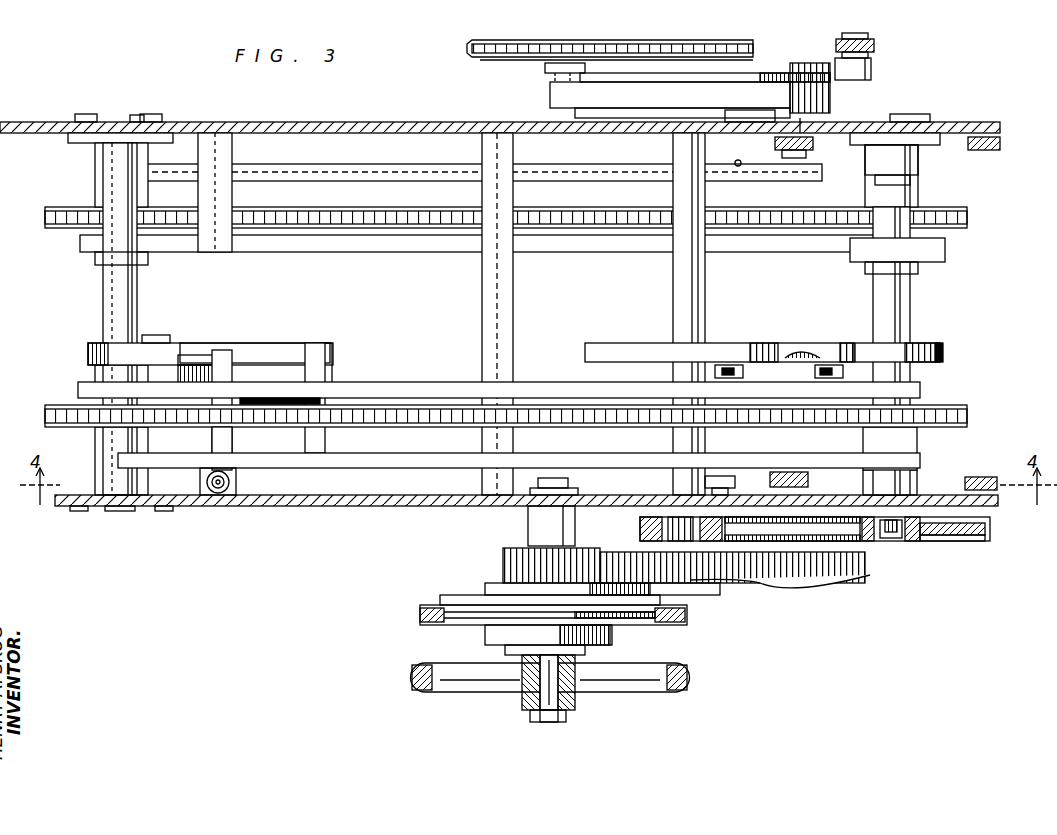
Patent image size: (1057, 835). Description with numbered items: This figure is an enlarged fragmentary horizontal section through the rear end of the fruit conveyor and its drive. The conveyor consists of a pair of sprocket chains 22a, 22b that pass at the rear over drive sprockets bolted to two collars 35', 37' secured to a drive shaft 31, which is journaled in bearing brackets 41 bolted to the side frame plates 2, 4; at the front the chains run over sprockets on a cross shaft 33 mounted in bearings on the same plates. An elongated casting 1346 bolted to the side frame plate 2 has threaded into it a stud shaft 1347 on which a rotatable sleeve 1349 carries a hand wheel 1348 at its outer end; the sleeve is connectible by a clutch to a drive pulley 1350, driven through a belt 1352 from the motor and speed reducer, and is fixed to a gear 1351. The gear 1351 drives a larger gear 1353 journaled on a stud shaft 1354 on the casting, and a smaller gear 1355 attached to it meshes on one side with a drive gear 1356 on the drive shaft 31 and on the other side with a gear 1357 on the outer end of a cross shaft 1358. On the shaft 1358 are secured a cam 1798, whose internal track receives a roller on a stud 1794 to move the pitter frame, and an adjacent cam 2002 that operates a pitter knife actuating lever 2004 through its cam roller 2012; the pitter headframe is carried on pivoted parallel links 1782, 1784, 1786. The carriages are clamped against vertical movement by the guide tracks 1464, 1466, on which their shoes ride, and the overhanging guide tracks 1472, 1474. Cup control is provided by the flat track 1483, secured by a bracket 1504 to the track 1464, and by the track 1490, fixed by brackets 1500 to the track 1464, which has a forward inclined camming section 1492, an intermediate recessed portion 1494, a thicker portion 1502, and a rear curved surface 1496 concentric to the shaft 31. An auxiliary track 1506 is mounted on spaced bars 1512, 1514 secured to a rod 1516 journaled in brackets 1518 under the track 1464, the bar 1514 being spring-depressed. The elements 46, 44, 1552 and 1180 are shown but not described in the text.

The side frame plate 4 is at (282, 122).
The side frame plate 2 is at (346, 507).
The upper rack bar 46 is at (500, 58).
The gear 44 is at (750, 64).
The cam 1798 is at (548, 95).
The cam 2002 is at (652, 73).
The pitter knife actuating lever 2004 is at (872, 46).
The cam roller 2012 is at (868, 70).
The stud 1794 is at (808, 132).
The pivoted parallel link 1784 is at (806, 146).
The bearing bracket 41 is at (918, 160).
The pivoted parallel link 1786 is at (980, 150).
The collar 37' is at (902, 170).
The drive shaft 31 is at (880, 287).
The collar 35' is at (908, 448).
The cross shaft 33 is at (138, 290).
The cross shaft 1358 is at (702, 268).
The overhanging guide track 1474 is at (345, 172).
The guide track 1466 is at (346, 243).
The sprocket chain 22b is at (425, 222).
The sprocket chain 22a is at (398, 416).
The track 1483 is at (88, 345).
The bracket 1504 is at (172, 372).
The auxiliary control track 1506 is at (265, 352).
The bar 1512 is at (318, 370).
The bracket 1518 is at (232, 398).
The guide track 1464 is at (458, 382).
The rod 1516 is at (296, 422).
The bar 1514 is at (212, 443).
The overhanging guide track 1472 is at (398, 462).
The roller 1552 is at (212, 496).
The inclined camming section 1492 is at (592, 343).
The track 1490 is at (722, 343).
The recessed portion 1494 is at (798, 345).
The track portion 1502 is at (856, 345).
The curved track surface 1496 is at (928, 347).
The bracket 1500 is at (815, 372).
The spacer 1180 is at (790, 472).
The pivoted parallel link 1782 is at (985, 468).
The elongated casting 1346 is at (505, 508).
The gear 1357 is at (650, 528).
The drive gear 1356 is at (935, 538).
The gear 1351 is at (505, 560).
The gear 1353 is at (810, 584).
The gear 1355 is at (740, 560).
The stud shaft 1354 is at (690, 598).
The drive pulley 1350 is at (418, 612).
The belt 1352 is at (672, 620).
The hand wheel 1348 is at (688, 670).
The rotatable sleeve 1349 is at (528, 690).
The stud shaft 1347 is at (552, 693).